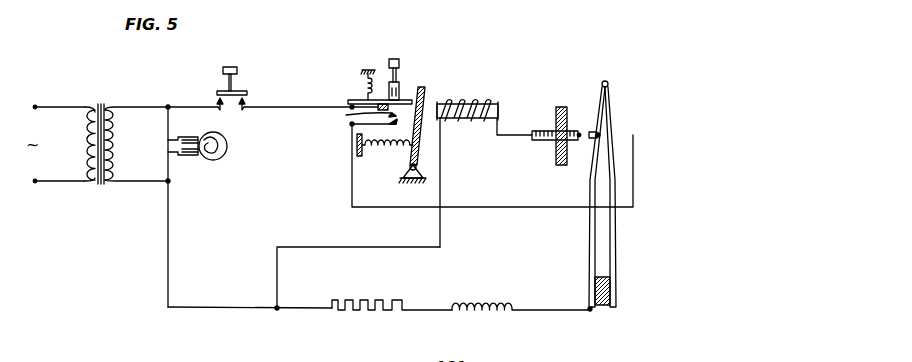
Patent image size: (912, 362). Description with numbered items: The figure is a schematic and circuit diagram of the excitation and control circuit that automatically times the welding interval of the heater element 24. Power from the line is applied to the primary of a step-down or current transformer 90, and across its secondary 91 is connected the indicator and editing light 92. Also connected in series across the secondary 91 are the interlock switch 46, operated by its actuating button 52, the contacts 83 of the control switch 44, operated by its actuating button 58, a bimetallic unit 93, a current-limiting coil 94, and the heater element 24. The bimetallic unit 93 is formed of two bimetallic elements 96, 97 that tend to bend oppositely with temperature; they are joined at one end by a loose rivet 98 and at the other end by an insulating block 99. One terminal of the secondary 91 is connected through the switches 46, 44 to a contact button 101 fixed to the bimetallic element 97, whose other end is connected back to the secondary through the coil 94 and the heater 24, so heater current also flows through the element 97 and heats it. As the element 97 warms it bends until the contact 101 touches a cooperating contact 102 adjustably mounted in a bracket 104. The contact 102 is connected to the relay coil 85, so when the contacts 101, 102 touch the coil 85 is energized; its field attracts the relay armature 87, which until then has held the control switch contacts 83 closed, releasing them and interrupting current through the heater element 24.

The heater element 24 is at (366, 300).
The control switch 44 is at (397, 74).
The interlock switch 46 is at (251, 78).
The actuating button 52 is at (239, 66).
The actuating button 58 is at (388, 62).
The contact buttons 83 is at (350, 117).
The relay coil 85 is at (468, 101).
The relay armature 87 is at (420, 135).
The step-down or current transformer 90 is at (105, 180).
The transformer secondary 91 is at (128, 128).
The indicator and editing light 92 is at (222, 158).
The bimetallic unit 93 is at (621, 214).
The current-limiting coil 94 is at (485, 316).
The bimetallic element 96 is at (618, 257).
The bimetallic element 97 is at (588, 253).
The loose rivet 98 is at (609, 84).
The insulating block 99 is at (602, 306).
The contact button 101 is at (590, 132).
The cooperating contact 102 is at (580, 128).
The bracket 104 is at (554, 152).